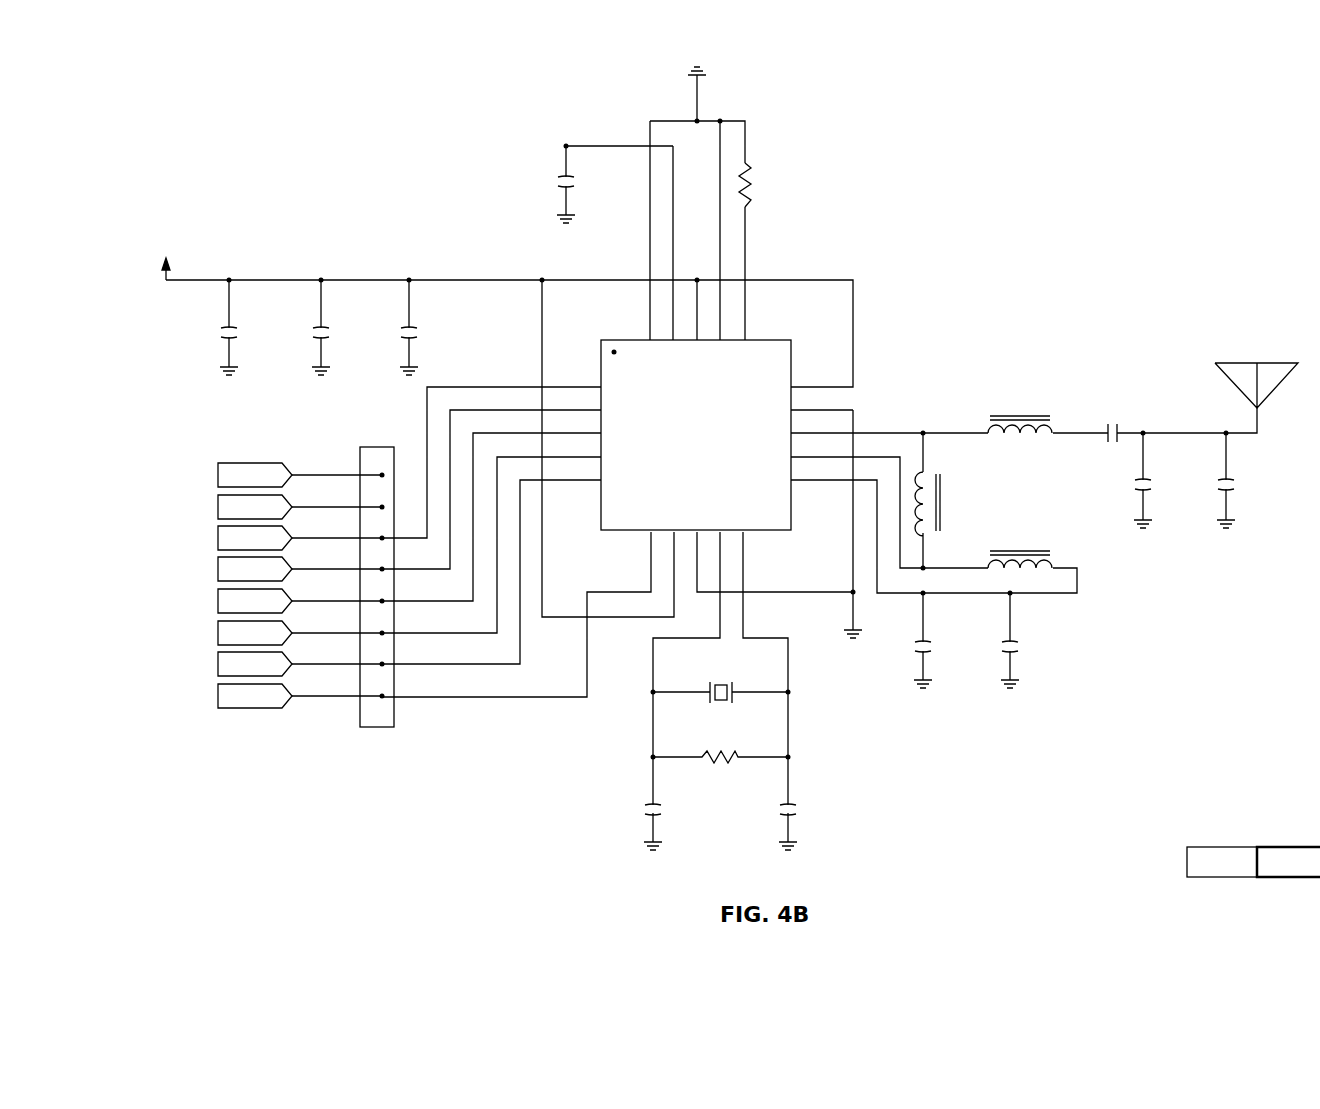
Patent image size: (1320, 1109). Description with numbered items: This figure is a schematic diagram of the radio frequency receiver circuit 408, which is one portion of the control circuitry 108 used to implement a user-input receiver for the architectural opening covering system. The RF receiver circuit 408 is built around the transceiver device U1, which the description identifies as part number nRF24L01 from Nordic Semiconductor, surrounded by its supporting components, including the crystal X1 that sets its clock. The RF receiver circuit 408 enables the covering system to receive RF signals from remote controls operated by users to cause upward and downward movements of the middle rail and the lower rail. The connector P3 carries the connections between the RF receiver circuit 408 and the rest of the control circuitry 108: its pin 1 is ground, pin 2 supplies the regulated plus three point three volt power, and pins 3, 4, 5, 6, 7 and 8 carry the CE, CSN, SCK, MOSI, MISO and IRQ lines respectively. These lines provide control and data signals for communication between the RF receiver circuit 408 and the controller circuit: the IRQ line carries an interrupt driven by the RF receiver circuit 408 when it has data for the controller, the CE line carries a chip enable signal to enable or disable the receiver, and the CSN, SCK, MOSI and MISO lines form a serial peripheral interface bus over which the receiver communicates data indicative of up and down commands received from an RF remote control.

The radio frequency (RF) receiver circuit 408 is at (990, 233).
The control circuitry 108 is at (1318, 895).
The NRF24L01+ transceiver IC U1 is at (775, 436).
The 8-pin connector header P3 is at (306, 574).
The 16 MHz crystal X1 is at (720, 674).
The connector P3 pin 1 (GND) 1 is at (338, 469).
The connector P3 pin 2 (+3.3V) 2 is at (338, 501).
The connector P3 pin 3 (CE) 3 is at (338, 532).
The connector P3 pin 4 (CSN) 4 is at (338, 563).
The connector P3 pin 5 (SCK) 5 is at (338, 595).
The connector P3 pin 6 (MOSI) 6 is at (338, 627).
The connector P3 pin 7 (MISO) 7 is at (338, 658).
The connector P3 pin 8 (IRQ) 8 is at (338, 690).